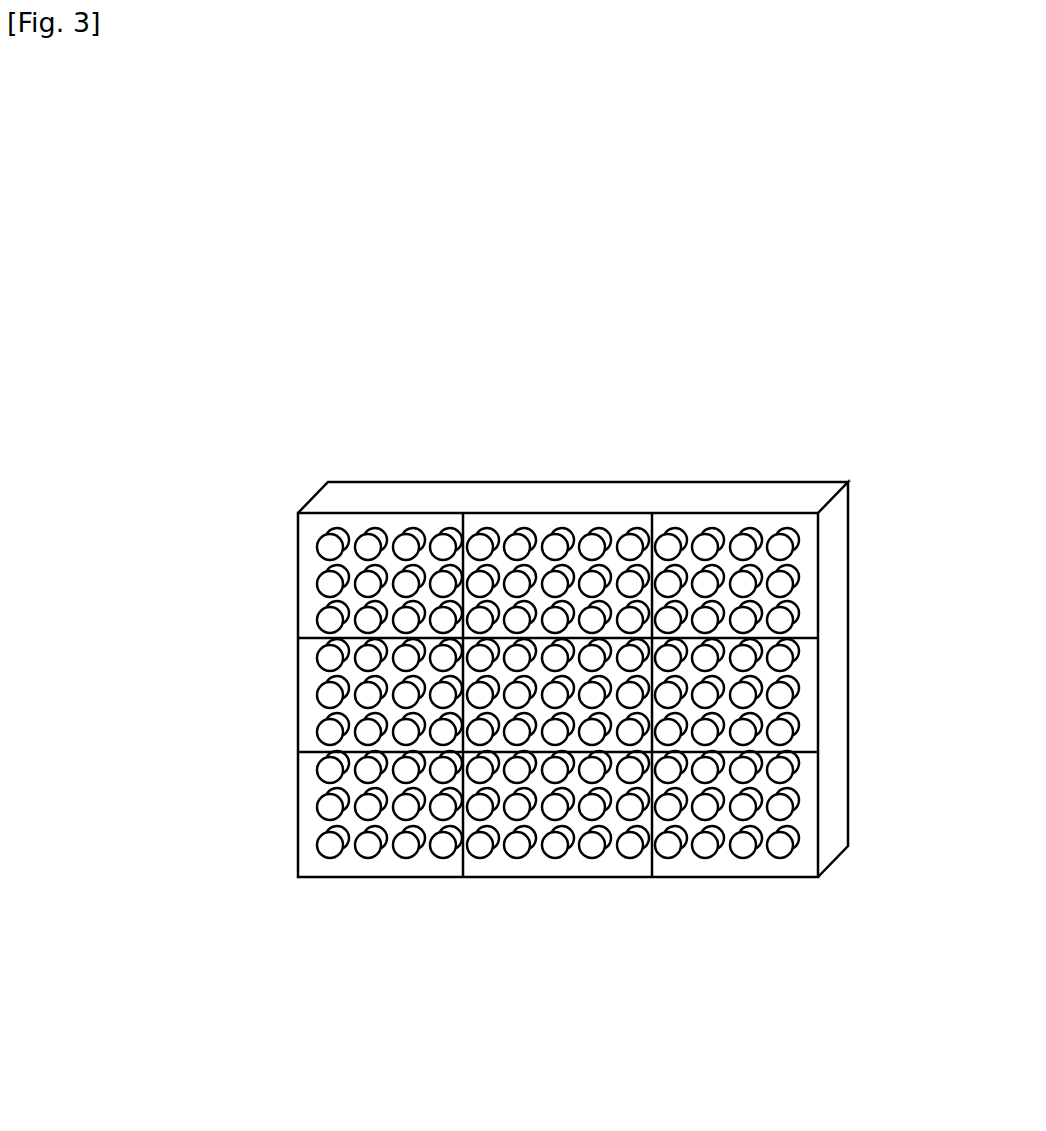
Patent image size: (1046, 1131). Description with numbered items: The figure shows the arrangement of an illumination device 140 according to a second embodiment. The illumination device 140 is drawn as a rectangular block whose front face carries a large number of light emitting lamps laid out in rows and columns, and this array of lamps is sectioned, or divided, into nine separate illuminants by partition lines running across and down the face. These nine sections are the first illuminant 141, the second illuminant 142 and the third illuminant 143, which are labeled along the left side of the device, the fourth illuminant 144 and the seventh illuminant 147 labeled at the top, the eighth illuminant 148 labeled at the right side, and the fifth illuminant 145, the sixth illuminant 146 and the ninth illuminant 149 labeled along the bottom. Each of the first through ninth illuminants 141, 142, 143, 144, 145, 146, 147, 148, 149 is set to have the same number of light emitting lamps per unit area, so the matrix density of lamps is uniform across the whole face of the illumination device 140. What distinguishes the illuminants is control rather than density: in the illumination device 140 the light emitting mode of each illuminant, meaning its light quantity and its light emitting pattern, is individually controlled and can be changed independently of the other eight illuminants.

The illumination device 140 is at (611, 474).
The first illuminant 141 is at (317, 583).
The second illuminant 142 is at (317, 697).
The third illuminant 143 is at (317, 810).
The fourth illuminant 144 is at (552, 533).
The fifth illuminant 145 is at (503, 753).
The sixth illuminant 146 is at (587, 860).
The seventh illuminant 147 is at (758, 528).
The eighth illuminant 148 is at (800, 698).
The ninth illuminant 149 is at (750, 850).